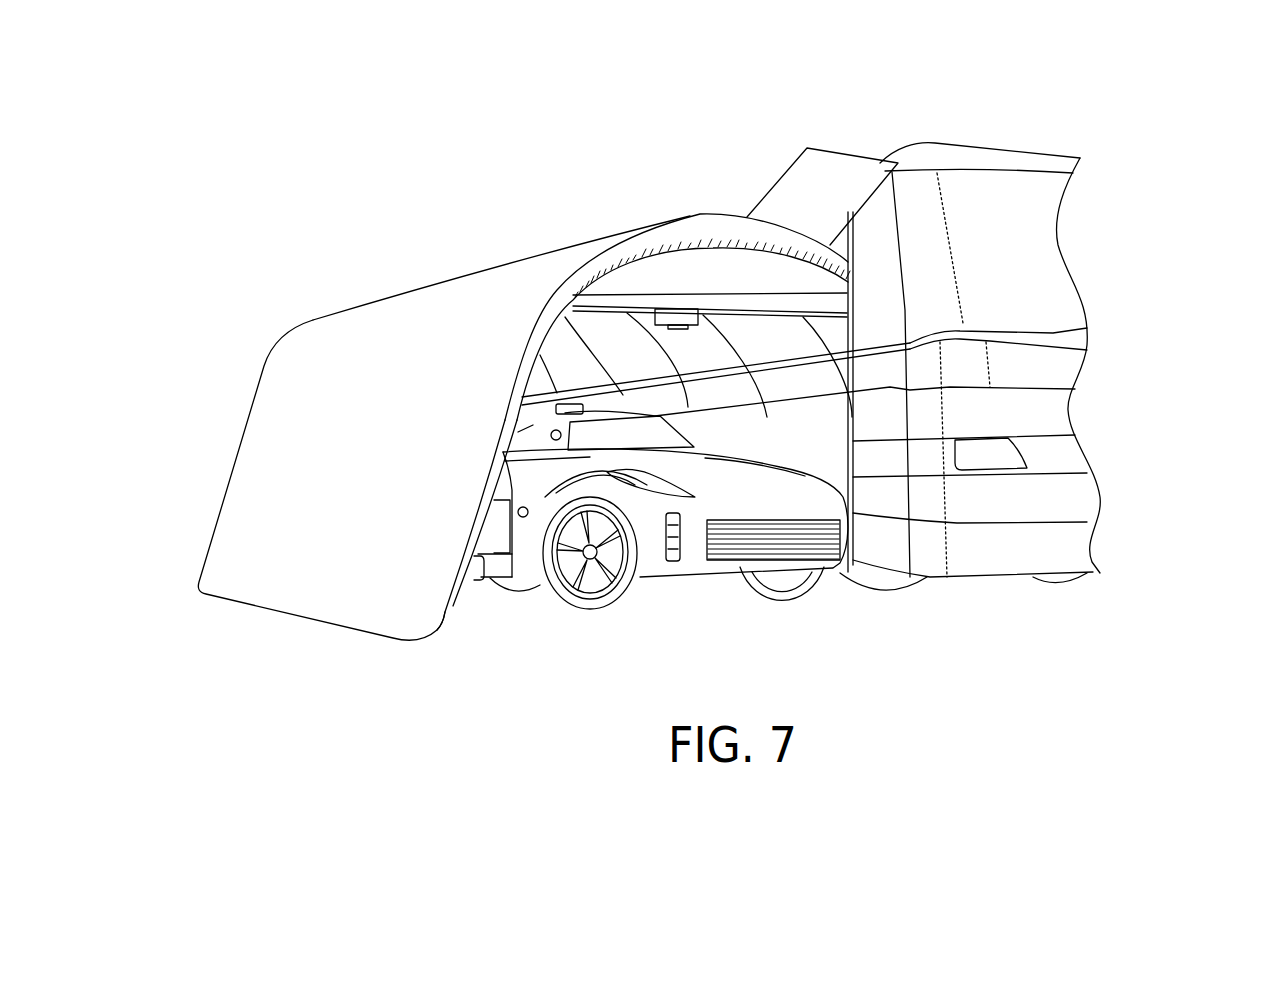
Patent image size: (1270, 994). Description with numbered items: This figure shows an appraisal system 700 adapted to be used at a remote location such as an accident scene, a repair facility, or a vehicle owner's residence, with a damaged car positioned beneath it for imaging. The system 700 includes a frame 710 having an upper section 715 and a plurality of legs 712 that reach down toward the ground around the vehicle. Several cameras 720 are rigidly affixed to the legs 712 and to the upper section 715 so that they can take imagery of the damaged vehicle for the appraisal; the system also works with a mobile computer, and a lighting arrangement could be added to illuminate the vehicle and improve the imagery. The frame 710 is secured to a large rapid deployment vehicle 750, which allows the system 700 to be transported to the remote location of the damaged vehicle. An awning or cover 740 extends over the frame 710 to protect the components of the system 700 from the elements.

The appraisal system 700 is at (1103, 210).
The frame 710 is at (702, 228).
The legs 712 is at (449, 594).
The upper section 715 is at (615, 302).
The cameras 720 is at (683, 322).
The awning or cover 740 is at (422, 333).
The rapid deployment vehicle 750 is at (1043, 408).